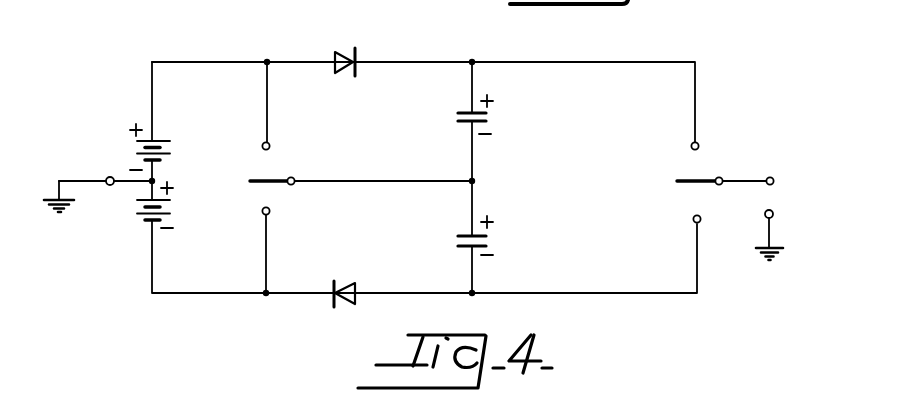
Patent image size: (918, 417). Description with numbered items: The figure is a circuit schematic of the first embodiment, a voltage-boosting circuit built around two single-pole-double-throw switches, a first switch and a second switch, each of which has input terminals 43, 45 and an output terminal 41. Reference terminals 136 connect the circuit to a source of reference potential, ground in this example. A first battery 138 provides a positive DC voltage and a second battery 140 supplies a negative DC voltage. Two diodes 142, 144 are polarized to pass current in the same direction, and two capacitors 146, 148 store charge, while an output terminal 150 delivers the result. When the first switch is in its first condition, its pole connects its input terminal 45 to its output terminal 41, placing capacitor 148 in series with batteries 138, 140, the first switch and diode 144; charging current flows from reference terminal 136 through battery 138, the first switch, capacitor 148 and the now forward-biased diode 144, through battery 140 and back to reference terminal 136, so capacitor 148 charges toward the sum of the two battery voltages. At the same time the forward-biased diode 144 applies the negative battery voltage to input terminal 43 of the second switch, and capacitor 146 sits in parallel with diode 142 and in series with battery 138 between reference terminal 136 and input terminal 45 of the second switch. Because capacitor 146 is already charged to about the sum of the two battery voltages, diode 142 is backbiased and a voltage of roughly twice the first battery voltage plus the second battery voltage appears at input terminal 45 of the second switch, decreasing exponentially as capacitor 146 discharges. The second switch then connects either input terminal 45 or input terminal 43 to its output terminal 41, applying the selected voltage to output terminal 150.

The reference terminals 136 is at (110, 177).
The first battery 138 is at (165, 135).
The second battery 140 is at (138, 223).
The diode 142 is at (357, 50).
The diode 144 is at (333, 306).
The capacitor 146 is at (484, 124).
The capacitor 148 is at (486, 237).
The output terminal 150 is at (775, 177).
The output terminal 41 is at (295, 185).
The input terminal 43 is at (270, 214).
The input terminal 45 is at (270, 144).